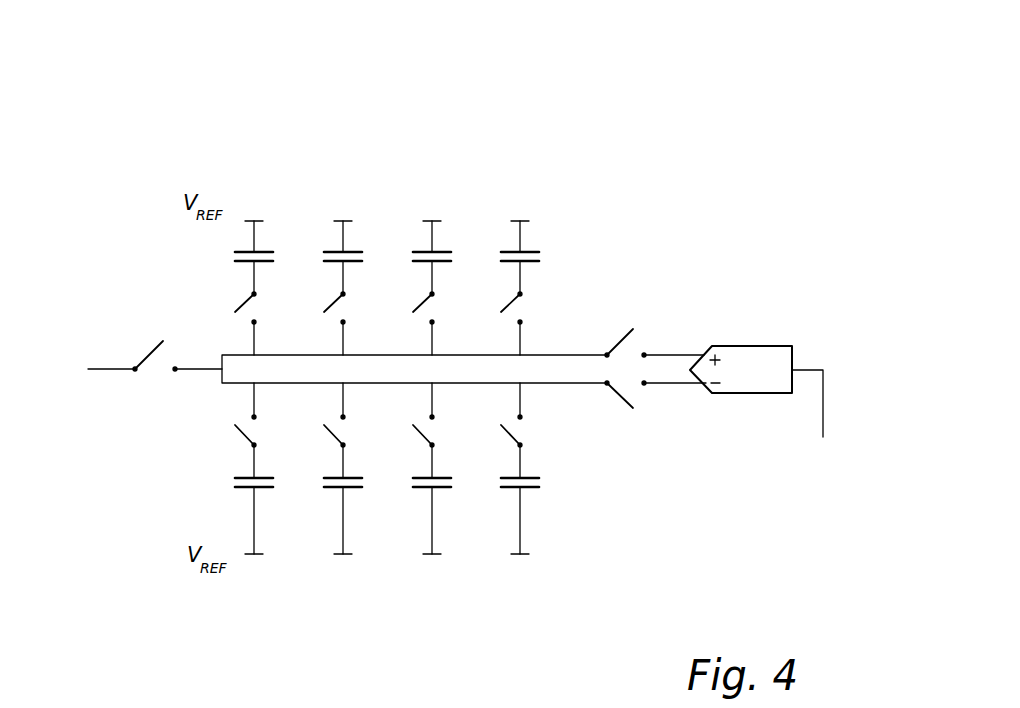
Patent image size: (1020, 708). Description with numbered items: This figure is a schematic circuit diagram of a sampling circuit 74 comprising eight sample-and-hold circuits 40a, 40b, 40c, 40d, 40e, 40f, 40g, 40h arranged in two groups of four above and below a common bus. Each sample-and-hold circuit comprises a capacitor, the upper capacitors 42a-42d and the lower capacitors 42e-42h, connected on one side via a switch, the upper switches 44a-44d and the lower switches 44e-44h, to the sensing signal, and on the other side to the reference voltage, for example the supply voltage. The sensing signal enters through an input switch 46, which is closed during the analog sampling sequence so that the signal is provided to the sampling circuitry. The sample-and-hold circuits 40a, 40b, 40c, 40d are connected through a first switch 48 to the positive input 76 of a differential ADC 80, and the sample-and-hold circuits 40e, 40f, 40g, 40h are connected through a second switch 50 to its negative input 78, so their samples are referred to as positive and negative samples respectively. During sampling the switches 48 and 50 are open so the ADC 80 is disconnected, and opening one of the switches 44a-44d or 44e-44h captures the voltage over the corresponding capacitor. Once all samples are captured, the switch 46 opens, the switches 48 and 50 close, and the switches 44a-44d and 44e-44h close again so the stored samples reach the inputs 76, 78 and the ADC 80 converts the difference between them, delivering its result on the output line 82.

The sampling circuit 74 is at (730, 90).
The sample-and-hold circuit 40a is at (257, 175).
The sample-and-hold circuit 40b is at (346, 175).
The sample-and-hold circuit 40c is at (435, 175).
The sample-and-hold circuit 40d is at (523, 175).
The sample-and-hold circuit 40e is at (258, 577).
The sample-and-hold circuit 40f is at (347, 577).
The sample-and-hold circuit 40g is at (436, 577).
The sample-and-hold circuit 40h is at (524, 577).
The capacitors 42a-42d is at (222, 257).
The capacitors 42e-42h is at (223, 482).
The switches 44a-44d is at (237, 308).
The switches 44e-44h is at (240, 434).
The switch 46 is at (148, 353).
The first switch 48 is at (622, 338).
The second switch 50 is at (623, 402).
The positive input 76 is at (674, 355).
The negative input 78 is at (680, 383).
The ADC 80 is at (750, 346).
The output line 82 is at (810, 369).